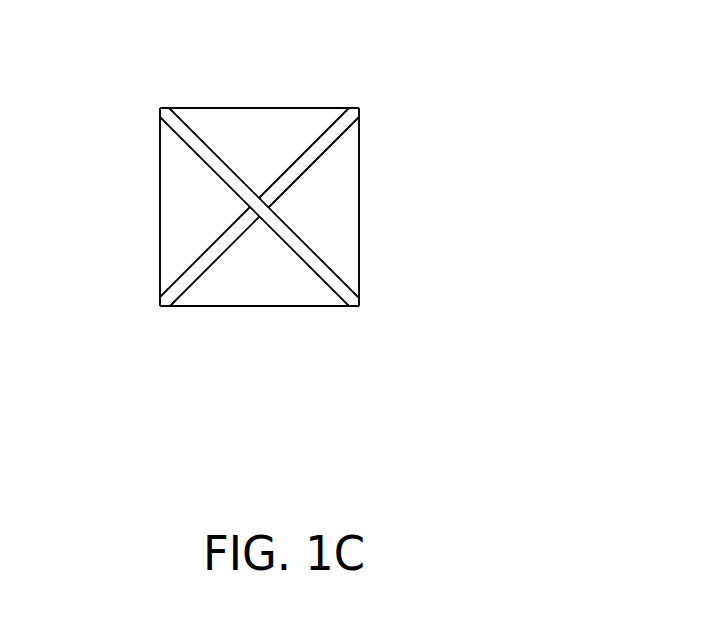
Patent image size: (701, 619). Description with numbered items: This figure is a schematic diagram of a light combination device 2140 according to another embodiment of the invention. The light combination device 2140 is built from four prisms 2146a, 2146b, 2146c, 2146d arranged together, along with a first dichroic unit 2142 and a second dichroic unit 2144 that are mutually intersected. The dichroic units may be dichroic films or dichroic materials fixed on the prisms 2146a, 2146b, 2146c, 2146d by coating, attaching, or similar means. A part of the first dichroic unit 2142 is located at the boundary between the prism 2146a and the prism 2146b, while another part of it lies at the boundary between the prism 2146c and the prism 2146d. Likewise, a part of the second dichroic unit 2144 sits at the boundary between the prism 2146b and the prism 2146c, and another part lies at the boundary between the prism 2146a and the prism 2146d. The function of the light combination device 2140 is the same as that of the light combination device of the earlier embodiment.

The light combination device 2140 is at (542, 432).
The first dichroic unit 2142 is at (350, 122).
The second dichroic unit 2144 is at (347, 290).
The prism 2146a is at (337, 198).
The prism 2146b is at (254, 115).
The prism 2146c is at (168, 210).
The prism 2146d is at (261, 297).